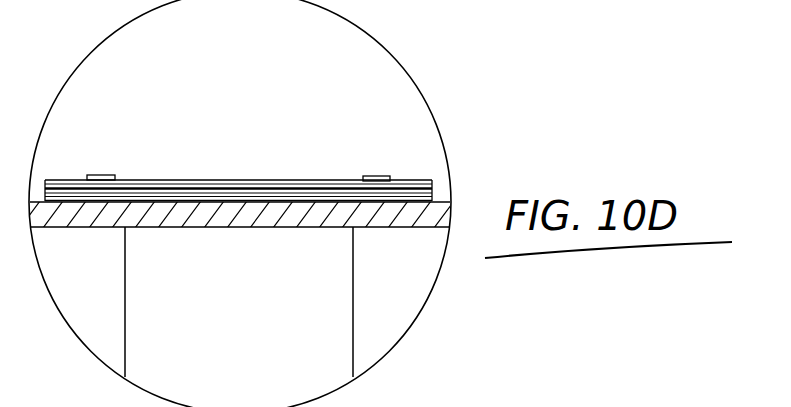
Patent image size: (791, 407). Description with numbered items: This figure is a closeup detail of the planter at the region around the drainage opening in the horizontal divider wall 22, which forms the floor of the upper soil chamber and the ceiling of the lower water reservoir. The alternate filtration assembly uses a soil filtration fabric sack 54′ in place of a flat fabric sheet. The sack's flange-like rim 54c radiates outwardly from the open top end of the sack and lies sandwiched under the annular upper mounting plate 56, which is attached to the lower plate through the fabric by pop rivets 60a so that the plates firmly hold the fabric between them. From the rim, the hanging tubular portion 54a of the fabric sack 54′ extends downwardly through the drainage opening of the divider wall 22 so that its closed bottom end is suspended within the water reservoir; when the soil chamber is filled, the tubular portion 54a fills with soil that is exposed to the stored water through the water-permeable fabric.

The horizontal divider wall 22 is at (73, 217).
The upper mounting plate 56 is at (136, 180).
The flange-like rim 54c is at (193, 193).
The pop rivets 60a is at (98, 175).
The soil filtration fabric sack 54′ is at (151, 273).
The hanging tubular portion 54a is at (337, 303).